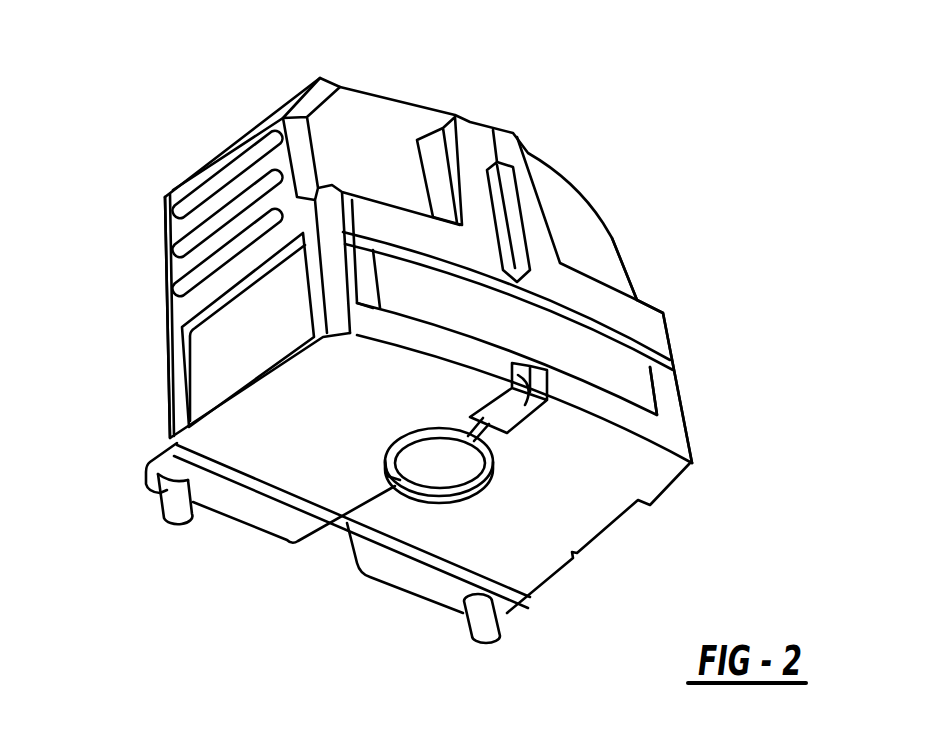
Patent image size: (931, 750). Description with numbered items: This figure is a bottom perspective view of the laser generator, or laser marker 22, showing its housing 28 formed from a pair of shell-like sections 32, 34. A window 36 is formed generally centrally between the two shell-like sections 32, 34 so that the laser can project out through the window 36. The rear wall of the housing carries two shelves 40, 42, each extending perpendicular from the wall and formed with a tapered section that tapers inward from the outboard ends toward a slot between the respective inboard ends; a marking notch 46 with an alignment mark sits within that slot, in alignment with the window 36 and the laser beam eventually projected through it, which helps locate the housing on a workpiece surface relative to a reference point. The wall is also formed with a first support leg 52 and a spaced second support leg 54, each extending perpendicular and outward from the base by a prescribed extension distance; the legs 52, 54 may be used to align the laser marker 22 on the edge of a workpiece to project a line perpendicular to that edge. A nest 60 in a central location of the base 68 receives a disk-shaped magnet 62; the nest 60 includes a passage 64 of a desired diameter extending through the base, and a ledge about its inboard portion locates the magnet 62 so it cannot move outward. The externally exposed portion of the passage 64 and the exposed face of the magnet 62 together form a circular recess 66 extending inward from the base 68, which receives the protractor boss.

The laser marker 22 is at (558, 102).
The housing 28 is at (167, 322).
The shell-like section 32 is at (163, 385).
The shell-like section 34 is at (696, 450).
The window 36 is at (510, 205).
The shelf 40 is at (223, 520).
The shelf 42 is at (440, 587).
The marking notch 46 is at (398, 483).
The first support leg 52 is at (173, 505).
The second support leg 54 is at (497, 613).
The nest 60 is at (478, 492).
The magnet 62 is at (463, 463).
The passage 64 is at (425, 492).
The circular recess 66 is at (387, 470).
The base 68 is at (346, 432).